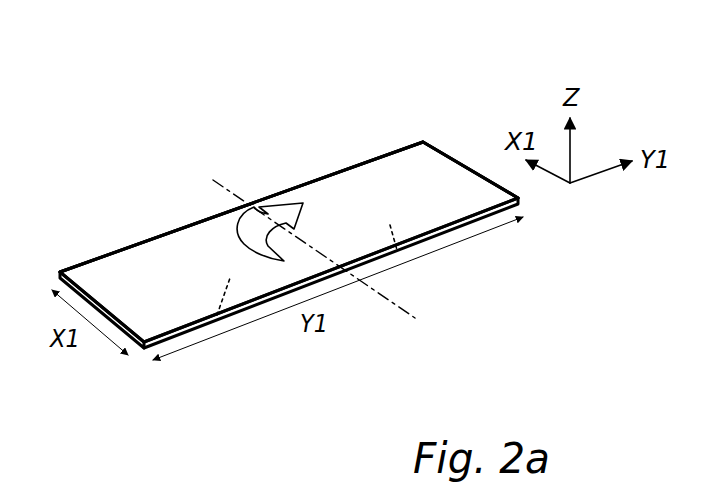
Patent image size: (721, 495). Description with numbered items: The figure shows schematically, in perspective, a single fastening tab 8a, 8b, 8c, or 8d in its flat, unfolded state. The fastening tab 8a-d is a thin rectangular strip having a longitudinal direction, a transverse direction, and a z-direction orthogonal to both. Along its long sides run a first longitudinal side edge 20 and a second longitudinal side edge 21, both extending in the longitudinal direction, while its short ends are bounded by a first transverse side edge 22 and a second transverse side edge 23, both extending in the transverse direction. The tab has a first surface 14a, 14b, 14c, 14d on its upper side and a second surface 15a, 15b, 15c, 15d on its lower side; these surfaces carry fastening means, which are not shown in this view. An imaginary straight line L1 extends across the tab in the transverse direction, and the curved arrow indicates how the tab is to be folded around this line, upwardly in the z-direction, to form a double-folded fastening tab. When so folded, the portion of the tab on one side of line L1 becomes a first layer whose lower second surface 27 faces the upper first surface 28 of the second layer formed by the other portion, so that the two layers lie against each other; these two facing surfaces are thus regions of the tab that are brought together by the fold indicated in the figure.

The fastening tab 8a is at (274, 227).
The fastening tab 8b is at (274, 227).
The fastening tab 8c is at (274, 227).
The fastening tab 8d is at (274, 227).
The first surface 14a is at (289, 183).
The first surface 14b is at (289, 183).
The first surface 14c is at (289, 183).
The first surface 14d is at (342, 198).
The second surface 15a is at (260, 354).
The second surface 15b is at (260, 354).
The second surface 15c is at (260, 354).
The second surface 15d is at (217, 320).
The first longitudinal side edge 20 is at (300, 184).
The second longitudinal side edge 21 is at (425, 240).
The first transverse side edge 22 is at (125, 337).
The second transverse side edge 23 is at (442, 152).
The second surface of the first layer 27 is at (115, 272).
The first surface of the second layer 28 is at (397, 250).
The imaginary straight line L1 is at (329, 260).